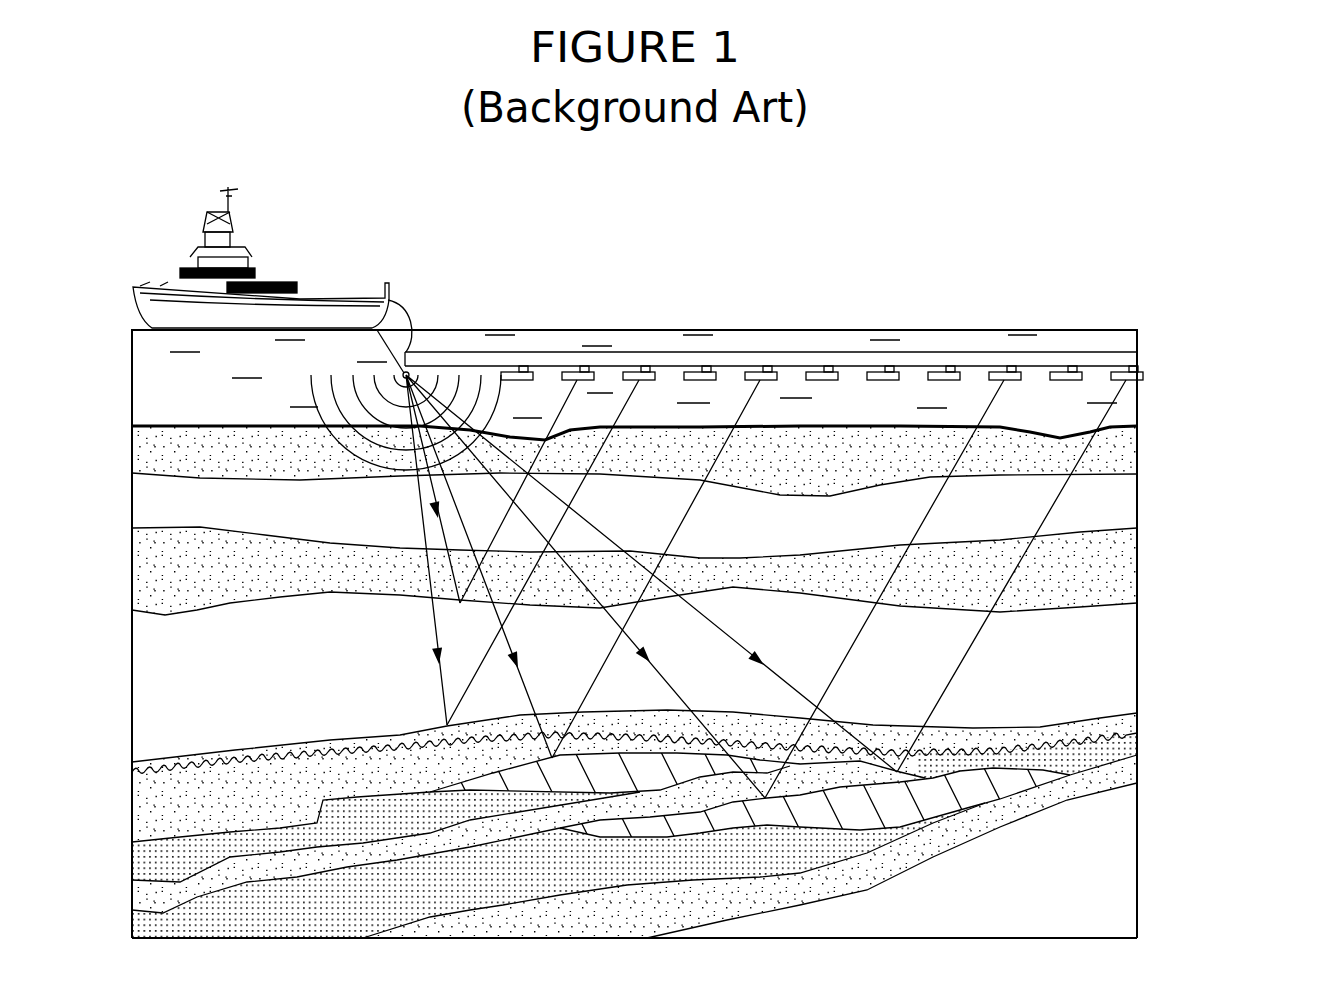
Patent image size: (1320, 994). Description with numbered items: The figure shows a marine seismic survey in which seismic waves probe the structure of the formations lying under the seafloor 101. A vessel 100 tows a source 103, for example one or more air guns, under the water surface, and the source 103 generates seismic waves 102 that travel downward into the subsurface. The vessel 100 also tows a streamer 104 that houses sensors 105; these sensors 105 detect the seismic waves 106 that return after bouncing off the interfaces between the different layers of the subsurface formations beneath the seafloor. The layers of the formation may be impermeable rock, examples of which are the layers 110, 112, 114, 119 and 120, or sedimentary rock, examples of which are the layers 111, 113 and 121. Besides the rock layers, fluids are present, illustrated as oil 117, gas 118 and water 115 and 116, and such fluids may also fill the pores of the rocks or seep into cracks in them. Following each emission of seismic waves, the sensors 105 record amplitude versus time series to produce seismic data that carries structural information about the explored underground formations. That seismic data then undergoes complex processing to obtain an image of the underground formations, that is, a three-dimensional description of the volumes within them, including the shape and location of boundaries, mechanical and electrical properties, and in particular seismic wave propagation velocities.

The vessel 100 is at (261, 237).
The seafloor 101 is at (634, 634).
The seismic waves 102 is at (438, 665).
The source 103 is at (407, 368).
The streamer 104 is at (660, 352).
The sensors 105 is at (826, 371).
The seismic waves 106 is at (958, 669).
The impermeable rock layer 110 is at (634, 461).
The sedimentary rock layer 111 is at (634, 495).
The impermeable rock layer 112 is at (634, 571).
The sedimentary rock layer 113 is at (634, 659).
The impermeable rock layer 114 is at (634, 776).
The water 115 is at (634, 807).
The water 116 is at (558, 870).
The oil 117 is at (773, 800).
The gas 118 is at (1138, 741).
The impermeable rock layer 119 is at (526, 837).
The impermeable rock layer 120 is at (750, 846).
The sedimentary rock layer 121 is at (634, 922).